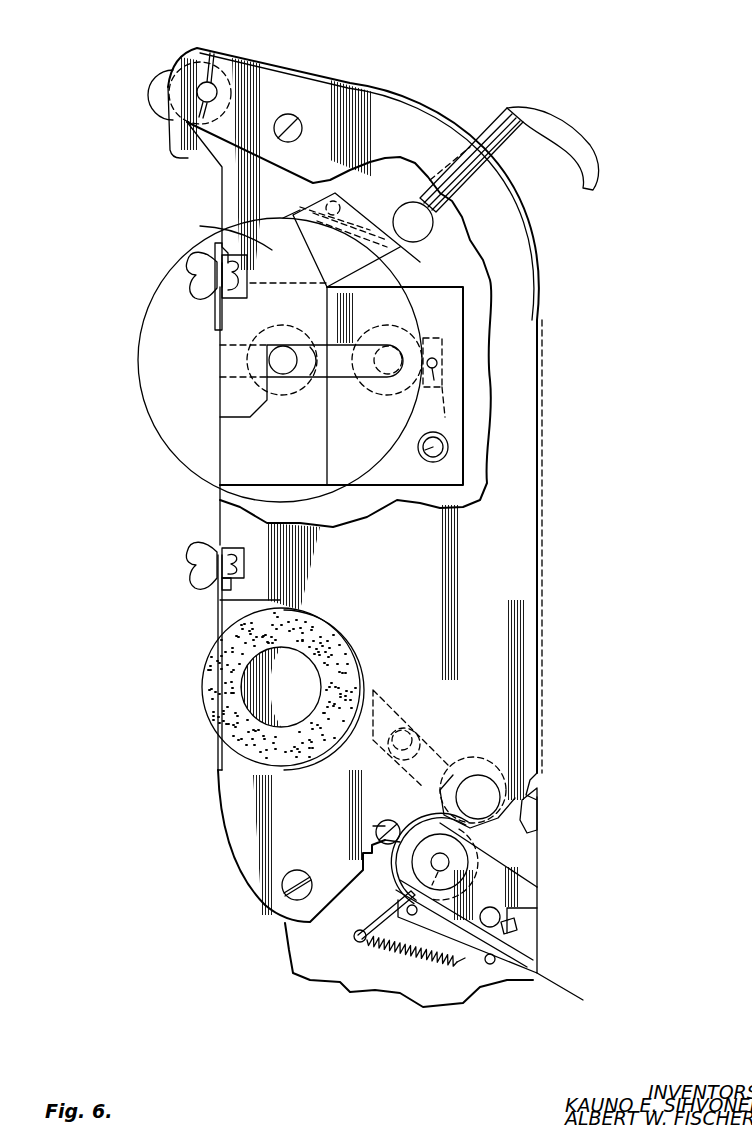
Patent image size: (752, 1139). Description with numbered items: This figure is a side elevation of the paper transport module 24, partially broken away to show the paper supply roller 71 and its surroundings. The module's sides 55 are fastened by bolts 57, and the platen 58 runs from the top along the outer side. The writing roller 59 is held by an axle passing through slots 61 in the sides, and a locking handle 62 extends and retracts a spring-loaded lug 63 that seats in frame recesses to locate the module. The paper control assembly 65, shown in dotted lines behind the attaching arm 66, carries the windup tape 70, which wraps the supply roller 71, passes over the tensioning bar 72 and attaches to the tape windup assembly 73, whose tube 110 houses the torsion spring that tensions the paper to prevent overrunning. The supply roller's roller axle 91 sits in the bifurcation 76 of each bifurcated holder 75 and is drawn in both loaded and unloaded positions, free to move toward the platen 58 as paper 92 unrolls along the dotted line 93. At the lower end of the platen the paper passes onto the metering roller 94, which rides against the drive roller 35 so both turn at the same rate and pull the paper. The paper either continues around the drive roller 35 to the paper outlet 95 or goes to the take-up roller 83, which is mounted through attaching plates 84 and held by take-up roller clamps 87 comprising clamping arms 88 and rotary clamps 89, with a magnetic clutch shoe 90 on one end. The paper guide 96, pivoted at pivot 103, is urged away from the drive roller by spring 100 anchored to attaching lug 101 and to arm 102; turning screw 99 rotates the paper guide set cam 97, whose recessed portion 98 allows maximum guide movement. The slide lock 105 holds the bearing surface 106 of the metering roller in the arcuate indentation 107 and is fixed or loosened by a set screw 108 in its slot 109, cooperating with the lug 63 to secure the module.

The paper transport module 24 is at (435, 73).
The drive roller 35 is at (463, 840).
The sides 55 is at (520, 542).
The bolts 57 is at (287, 114).
The platen 58 is at (540, 433).
The writing roller 59 is at (185, 53).
The slots 61 is at (214, 72).
The locking handles 62 is at (577, 135).
The spring-loaded lugs 63 is at (415, 233).
The paper control assembly 65 is at (367, 207).
The attaching arms 66 is at (223, 227).
The windup tape 70 is at (445, 417).
The paper supply roller 71 is at (323, 340).
The tensioning bar 72 is at (440, 377).
The tape windup assembly 73 is at (447, 450).
The bifurcated holders 75 is at (450, 470).
The bifurcation 76 is at (297, 390).
The take-up roller 83 is at (267, 677).
The attaching plates 84 is at (233, 760).
The take-up roller clamps 87 is at (210, 580).
The clamping arms 88 is at (210, 603).
The rotary clamps 89 is at (197, 543).
The magnetic clutch shoe 90 is at (210, 700).
The roller axle 91 is at (263, 373).
The paper 92 is at (170, 310).
The dotted line 93 is at (260, 148).
The metering roller 94 is at (520, 833).
The paper outlet 95 is at (527, 940).
The paper guide 96 is at (397, 873).
The paper guide set cam 97 is at (373, 830).
The recessed portion 98 is at (393, 847).
The screw 99 is at (390, 822).
The spring 100 is at (430, 962).
The attaching lug 101 is at (463, 960).
The arm 102 is at (363, 945).
The pivot 103 is at (360, 920).
The slide lock 105 is at (473, 773).
The bearing surface 106 is at (500, 783).
The arcuate indentation 107 is at (460, 773).
The set screw 108 is at (395, 715).
The slot 109 is at (420, 740).
The tube 110 is at (428, 455).